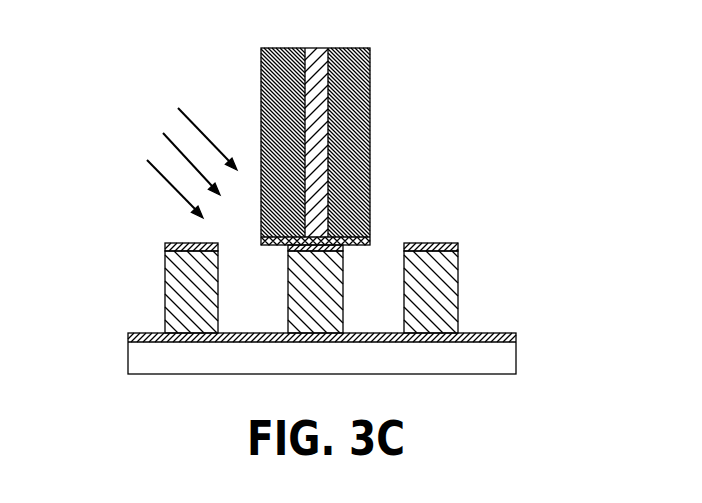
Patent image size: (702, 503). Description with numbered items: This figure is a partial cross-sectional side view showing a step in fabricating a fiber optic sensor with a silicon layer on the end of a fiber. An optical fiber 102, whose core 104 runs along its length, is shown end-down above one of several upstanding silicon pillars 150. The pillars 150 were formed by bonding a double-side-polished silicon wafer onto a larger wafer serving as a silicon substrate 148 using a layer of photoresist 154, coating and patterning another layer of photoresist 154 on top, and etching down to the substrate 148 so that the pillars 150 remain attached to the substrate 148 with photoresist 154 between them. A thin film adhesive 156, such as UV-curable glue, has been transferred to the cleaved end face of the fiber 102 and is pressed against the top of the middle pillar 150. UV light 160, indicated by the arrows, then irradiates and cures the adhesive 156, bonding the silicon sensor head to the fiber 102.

The optical fiber 102 is at (357, 128).
The core 104 is at (320, 83).
The silicon substrate 148 is at (516, 357).
The silicon pillar 150 is at (165, 273).
The photoresist 154 is at (172, 243).
The adhesive 156 is at (370, 243).
The UV light 160 is at (182, 163).